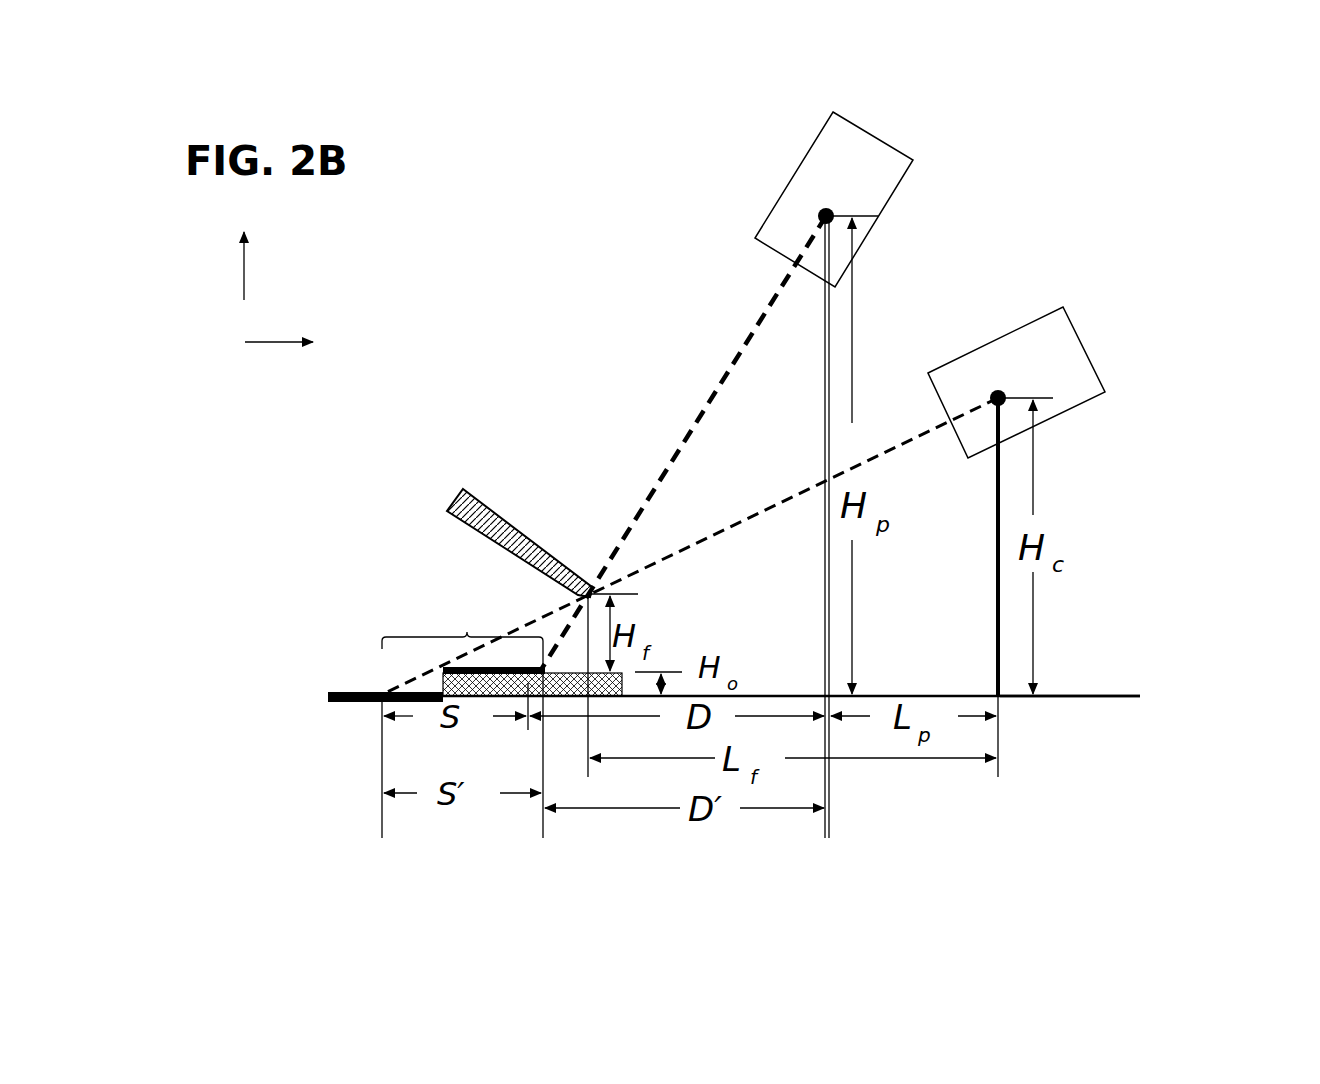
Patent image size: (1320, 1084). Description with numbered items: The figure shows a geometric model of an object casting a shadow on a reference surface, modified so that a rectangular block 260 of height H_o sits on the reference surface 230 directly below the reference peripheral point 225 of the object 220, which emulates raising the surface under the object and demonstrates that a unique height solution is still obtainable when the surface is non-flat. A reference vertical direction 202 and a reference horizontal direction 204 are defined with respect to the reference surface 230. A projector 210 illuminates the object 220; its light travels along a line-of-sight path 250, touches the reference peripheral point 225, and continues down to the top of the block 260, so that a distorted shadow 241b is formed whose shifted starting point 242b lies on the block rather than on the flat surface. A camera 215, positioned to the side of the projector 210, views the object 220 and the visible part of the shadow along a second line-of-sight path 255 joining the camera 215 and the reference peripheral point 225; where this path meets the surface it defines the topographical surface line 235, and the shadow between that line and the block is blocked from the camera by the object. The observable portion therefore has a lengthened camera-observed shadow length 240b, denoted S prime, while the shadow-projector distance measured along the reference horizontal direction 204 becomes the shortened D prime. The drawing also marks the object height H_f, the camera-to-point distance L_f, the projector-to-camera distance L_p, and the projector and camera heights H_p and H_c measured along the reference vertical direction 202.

The reference vertical direction 202 is at (244, 280).
The reference horizontal direction 204 is at (290, 342).
The projector 210 is at (882, 155).
The camera 215 is at (1058, 334).
The object 220 is at (490, 548).
The reference peripheral point 225 is at (592, 570).
The reference surface 230 is at (1093, 696).
The topographical surface line 235 is at (1170, 696).
The camera-observed shadow length 240b is at (467, 632).
The distorted shadow 241b is at (352, 693).
The shifted starting point 242b is at (542, 628).
The line-of-sight path 250 is at (733, 362).
The line-of-sight path 255 is at (807, 488).
The rectangular block 260 is at (480, 683).